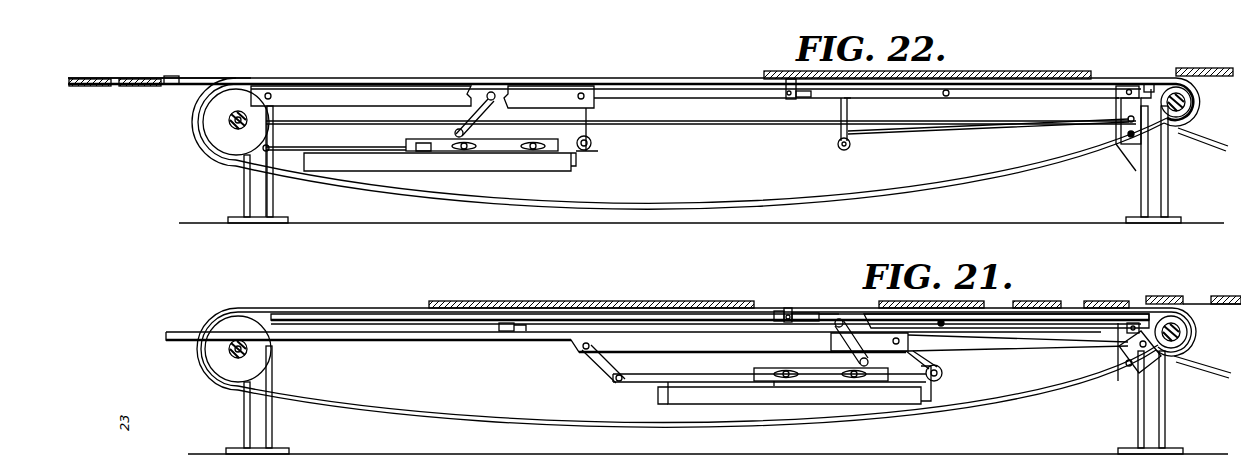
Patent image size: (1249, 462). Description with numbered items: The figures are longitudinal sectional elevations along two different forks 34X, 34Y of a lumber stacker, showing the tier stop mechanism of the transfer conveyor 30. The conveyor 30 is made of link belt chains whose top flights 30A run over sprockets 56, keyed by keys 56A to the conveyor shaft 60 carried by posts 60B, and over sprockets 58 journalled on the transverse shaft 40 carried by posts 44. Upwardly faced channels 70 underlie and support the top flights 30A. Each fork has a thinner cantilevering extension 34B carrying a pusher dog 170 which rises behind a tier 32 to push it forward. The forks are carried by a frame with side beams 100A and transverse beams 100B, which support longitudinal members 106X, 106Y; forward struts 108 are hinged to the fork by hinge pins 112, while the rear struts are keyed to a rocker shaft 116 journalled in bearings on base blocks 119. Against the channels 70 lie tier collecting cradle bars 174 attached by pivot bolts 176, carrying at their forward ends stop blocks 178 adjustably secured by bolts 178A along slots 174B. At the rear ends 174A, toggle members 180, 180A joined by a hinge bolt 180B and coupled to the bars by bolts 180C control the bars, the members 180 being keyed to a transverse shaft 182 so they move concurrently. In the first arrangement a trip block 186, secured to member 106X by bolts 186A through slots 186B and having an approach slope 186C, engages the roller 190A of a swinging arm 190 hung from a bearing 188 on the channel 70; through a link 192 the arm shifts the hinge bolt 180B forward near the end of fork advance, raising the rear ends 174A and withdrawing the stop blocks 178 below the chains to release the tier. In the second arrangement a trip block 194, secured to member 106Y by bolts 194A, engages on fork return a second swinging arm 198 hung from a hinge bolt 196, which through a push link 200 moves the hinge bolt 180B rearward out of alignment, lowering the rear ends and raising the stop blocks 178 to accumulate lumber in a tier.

In FIG. 21, the transfer conveyor 30 is at (430, 301).
In FIG. 22, the top flights of the transfer conveyor chains 30A is at (605, 77).
In FIG. 22, the tier of lumber 32 is at (808, 70).
In FIG. 22, the cantilevering extension of fork 34B is at (83, 92).
In FIG. 21, the cantilevering extension of fork 34B is at (375, 338).
In FIG. 22, the fork 34X is at (390, 93).
In FIG. 21, the fork 34Y is at (683, 342).
In FIG. 22, the transverse shaft 40 is at (1184, 102).
In FIG. 21, the transverse shaft 40 is at (1180, 332).
In FIG. 22, the posts 44 is at (1156, 199).
In FIG. 21, the posts 44 is at (1146, 417).
In FIG. 22, the sprockets 56 is at (217, 118).
In FIG. 21, the sprockets 56 is at (217, 360).
In FIG. 22, the keys 56A is at (233, 128).
In FIG. 21, the keys 56A is at (230, 356).
In FIG. 22, the sprockets 58 is at (1172, 115).
In FIG. 21, the sprockets 58 is at (1173, 322).
In FIG. 22, the transverse conveyor shaft 60 is at (233, 133).
In FIG. 21, the transverse conveyor shaft 60 is at (232, 349).
In FIG. 22, the posts 60B is at (258, 193).
In FIG. 21, the posts 60B is at (258, 425).
In FIG. 22, the channels 70 is at (650, 90).
In FIG. 21, the channels 70 is at (490, 303).
In FIG. 22, the side beams 100A is at (347, 165).
In FIG. 21, the side beams 100A is at (703, 400).
In FIG. 21, the transverse beams 100B is at (655, 394).
In FIG. 22, the longitudinal fork frame member 106X is at (320, 147).
In FIG. 21, the longitudinal fork frame member 106Y is at (640, 373).
In FIG. 21, the forward struts 108 is at (596, 373).
In FIG. 21, the hinge pins 112 is at (589, 345).
In FIG. 21, the rocker shaft 116 is at (944, 376).
In FIG. 21, the base blocks 119 is at (928, 390).
In FIG. 22, the pusher dogs 170 is at (175, 77).
In FIG. 21, the pusher dogs 170 is at (505, 331).
In FIG. 22, the tier collecting cradle bars 174 is at (970, 95).
In FIG. 21, the tier collecting cradle bars 174 is at (1018, 308).
In FIG. 22, the rear ends of cradle bars 174A is at (1118, 85).
In FIG. 22, the longitudinal slots 174B is at (784, 98).
In FIG. 21, the longitudinal slots 174B is at (790, 322).
In FIG. 22, the pivot bolts 176 is at (948, 90).
In FIG. 21, the pivot bolts 176 is at (944, 318).
In FIG. 22, the stop blocks 178 is at (786, 78).
In FIG. 21, the stop blocks 178 is at (793, 307).
In FIG. 21, the bolts 178A is at (780, 312).
In FIG. 22, the toggle member 180 is at (1125, 134).
In FIG. 21, the toggle member 180 is at (1145, 368).
In FIG. 22, the toggle member 180A is at (1150, 83).
In FIG. 21, the toggle member 180A is at (1124, 345).
In FIG. 22, the hinge bolt 180B is at (1125, 119).
In FIG. 21, the hinge bolt 180B is at (1150, 350).
In FIG. 22, the bolts 180C is at (1140, 95).
In FIG. 22, the transverse shaft 182 is at (1133, 145).
In FIG. 21, the transverse shaft 182 is at (1128, 372).
In FIG. 22, the trip block 186 is at (501, 159).
In FIG. 22, the bolts 186A is at (533, 150).
In FIG. 22, the longitudinal slots 186B is at (455, 150).
In FIG. 22, the approach slope 186C is at (420, 150).
In FIG. 22, the bearing 188 is at (495, 99).
In FIG. 22, the swinging arm 190 is at (468, 116).
In FIG. 22, the roller 190A is at (454, 131).
In FIG. 22, the link 192 is at (715, 123).
In FIG. 21, the trip block 194 is at (818, 380).
In FIG. 21, the bolts 194A is at (788, 380).
In FIG. 22, the hinge bolt 196 is at (840, 108).
In FIG. 21, the hinge bolt 196 is at (828, 313).
In FIG. 22, the second swinging arm 198 is at (848, 108).
In FIG. 21, the second swinging arm 198 is at (846, 342).
In FIG. 22, the push link 200 is at (893, 132).
In FIG. 21, the push link 200 is at (1000, 344).